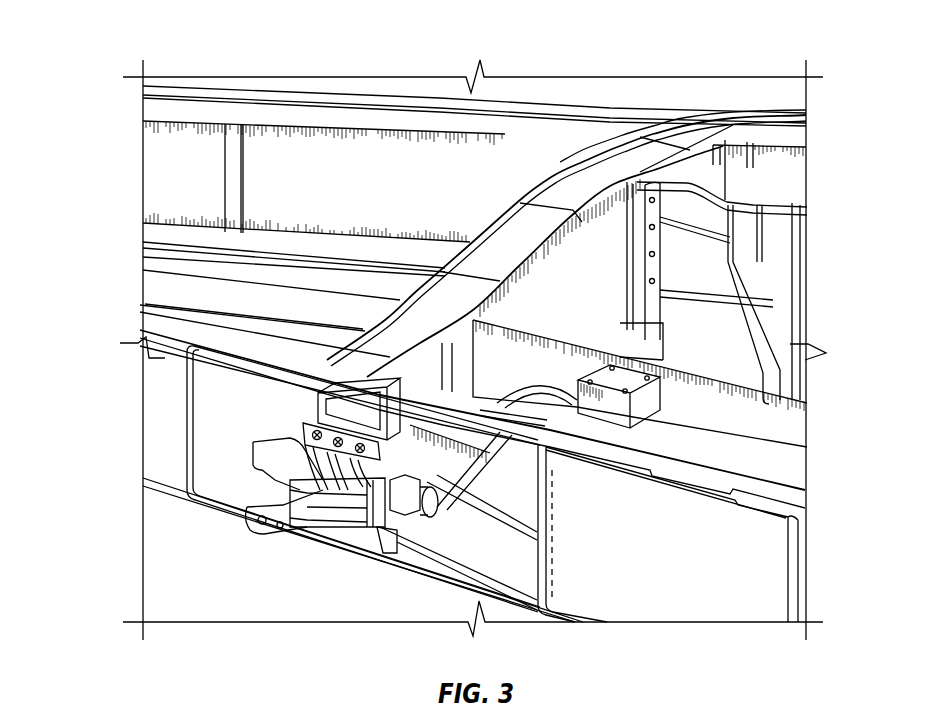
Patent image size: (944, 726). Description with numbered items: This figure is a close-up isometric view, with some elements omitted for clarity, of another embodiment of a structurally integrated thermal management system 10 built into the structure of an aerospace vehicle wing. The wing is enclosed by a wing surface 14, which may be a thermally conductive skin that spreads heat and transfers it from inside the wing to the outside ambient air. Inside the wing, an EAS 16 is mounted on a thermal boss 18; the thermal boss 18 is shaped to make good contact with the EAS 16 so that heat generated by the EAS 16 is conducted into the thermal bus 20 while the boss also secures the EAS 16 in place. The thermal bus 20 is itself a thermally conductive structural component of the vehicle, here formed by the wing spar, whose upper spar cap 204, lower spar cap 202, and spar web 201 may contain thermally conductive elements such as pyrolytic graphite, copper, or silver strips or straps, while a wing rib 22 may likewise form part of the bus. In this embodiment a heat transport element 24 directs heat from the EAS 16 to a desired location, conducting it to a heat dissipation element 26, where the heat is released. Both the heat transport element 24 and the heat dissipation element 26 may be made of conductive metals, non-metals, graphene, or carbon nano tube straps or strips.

The structurally integrated thermal management system 10 is at (793, 49).
The wing surface 14 is at (289, 310).
The EAS 16 is at (248, 433).
The thermal boss 18 is at (372, 402).
The thermal bus 20 is at (767, 562).
The wing rib 22 is at (612, 270).
The heat transport element 24 is at (563, 387).
The heat dissipation element 26 is at (618, 380).
The spar web 201 is at (688, 566).
The lower spar cap 202 is at (218, 508).
The upper spar cap 204 is at (157, 323).